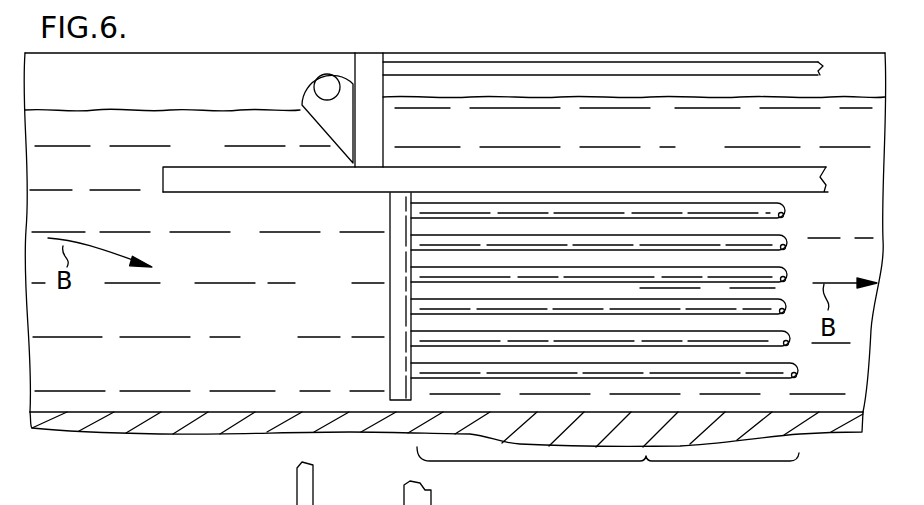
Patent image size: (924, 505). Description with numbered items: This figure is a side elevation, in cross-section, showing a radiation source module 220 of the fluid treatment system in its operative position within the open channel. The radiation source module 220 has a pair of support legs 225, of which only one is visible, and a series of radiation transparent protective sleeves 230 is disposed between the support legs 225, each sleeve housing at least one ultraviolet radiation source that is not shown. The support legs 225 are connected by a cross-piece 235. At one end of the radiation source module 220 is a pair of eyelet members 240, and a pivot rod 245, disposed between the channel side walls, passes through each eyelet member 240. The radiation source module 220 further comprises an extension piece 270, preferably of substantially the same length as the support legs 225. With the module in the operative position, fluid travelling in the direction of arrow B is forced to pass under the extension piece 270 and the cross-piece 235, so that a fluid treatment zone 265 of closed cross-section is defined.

The radiation source module 220 is at (378, 322).
The support leg 225 is at (397, 249).
The radiation transparent protective sleeve 230 is at (708, 245).
The cross-piece 235 is at (520, 178).
The eyelet member 240 is at (347, 68).
The pivot rod 245 is at (331, 62).
The fluid treatment zone 265 is at (608, 475).
The extension piece 270 is at (218, 171).